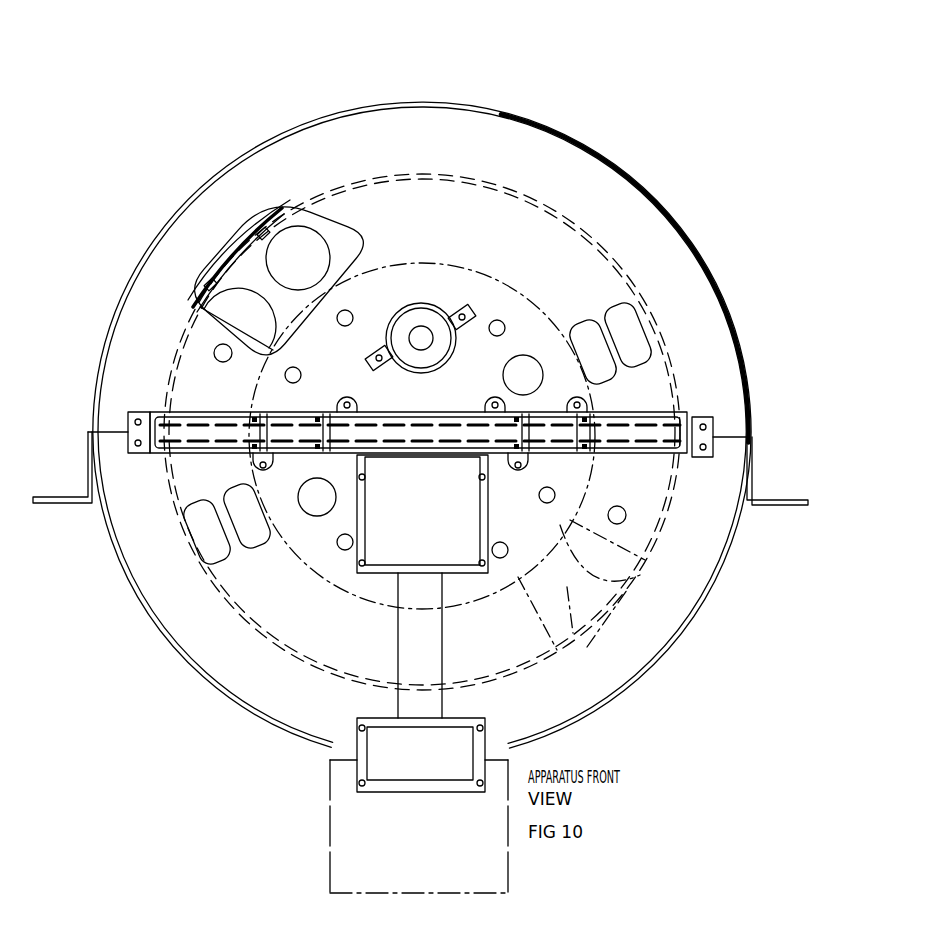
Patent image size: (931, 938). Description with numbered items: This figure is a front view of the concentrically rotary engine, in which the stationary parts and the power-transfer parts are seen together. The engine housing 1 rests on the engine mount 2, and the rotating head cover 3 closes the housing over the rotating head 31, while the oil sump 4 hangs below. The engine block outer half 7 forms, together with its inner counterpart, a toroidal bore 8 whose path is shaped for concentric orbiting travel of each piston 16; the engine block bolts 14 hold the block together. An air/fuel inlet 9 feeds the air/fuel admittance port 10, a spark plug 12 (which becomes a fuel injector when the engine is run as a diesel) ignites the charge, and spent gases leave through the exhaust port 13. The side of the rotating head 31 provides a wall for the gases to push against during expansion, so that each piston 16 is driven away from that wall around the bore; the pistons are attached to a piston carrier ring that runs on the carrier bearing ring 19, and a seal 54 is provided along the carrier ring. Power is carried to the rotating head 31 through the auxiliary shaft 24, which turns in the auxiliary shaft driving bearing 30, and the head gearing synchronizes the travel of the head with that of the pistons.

The engine housing 1 is at (565, 135).
The engine mount 2 is at (80, 492).
The rotating head cover 3 is at (640, 415).
The oil sump 4 is at (425, 833).
The engine block outer half 7 is at (580, 190).
The toroidal bore 8 is at (330, 288).
The air/fuel inlet 9 is at (523, 377).
The air/fuel admittance port 10 is at (290, 447).
The spark plug 12 is at (223, 353).
The exhaust port 13 is at (595, 342).
The engine block bolt 14 is at (293, 375).
The piston 16 is at (260, 272).
The carrier bearing ring 19 is at (217, 255).
The auxiliary shaft 24 is at (421, 338).
The auxiliary shaft driving bearing 30 is at (421, 430).
The rotating head 31 is at (456, 435).
The carrier ring seal 54 is at (213, 247).